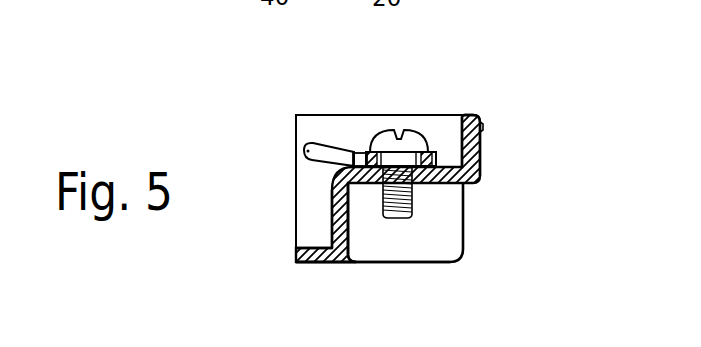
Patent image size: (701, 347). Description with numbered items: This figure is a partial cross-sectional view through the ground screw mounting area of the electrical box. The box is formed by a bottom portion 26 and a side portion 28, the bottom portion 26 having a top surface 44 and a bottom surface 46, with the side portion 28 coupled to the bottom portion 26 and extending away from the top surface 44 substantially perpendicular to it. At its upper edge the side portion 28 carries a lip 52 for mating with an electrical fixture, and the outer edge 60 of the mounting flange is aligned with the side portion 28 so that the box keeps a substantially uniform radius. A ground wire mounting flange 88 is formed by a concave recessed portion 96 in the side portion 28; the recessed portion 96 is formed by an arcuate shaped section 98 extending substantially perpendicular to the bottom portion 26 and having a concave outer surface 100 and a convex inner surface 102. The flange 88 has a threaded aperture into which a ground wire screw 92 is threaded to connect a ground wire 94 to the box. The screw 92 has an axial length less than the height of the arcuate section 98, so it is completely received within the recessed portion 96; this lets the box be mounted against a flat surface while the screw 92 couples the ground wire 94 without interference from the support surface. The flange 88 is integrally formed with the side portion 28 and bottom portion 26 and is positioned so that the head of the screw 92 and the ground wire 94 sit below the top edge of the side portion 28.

The bottom portion 26 is at (295, 255).
The side portion 28 is at (304, 121).
The top surface 44 is at (327, 235).
The bottom surface 46 is at (321, 262).
The lip 52 is at (483, 123).
The outer edge 60 is at (466, 115).
The ground wire mounting flange 88 is at (444, 158).
The ground wire screw 92 is at (400, 131).
The ground wire 94 is at (332, 144).
The recessed portion 96 is at (456, 238).
The arcuate shaped section 98 is at (405, 242).
The concave outer surface 100 is at (331, 200).
The convex inner surface 102 is at (350, 233).